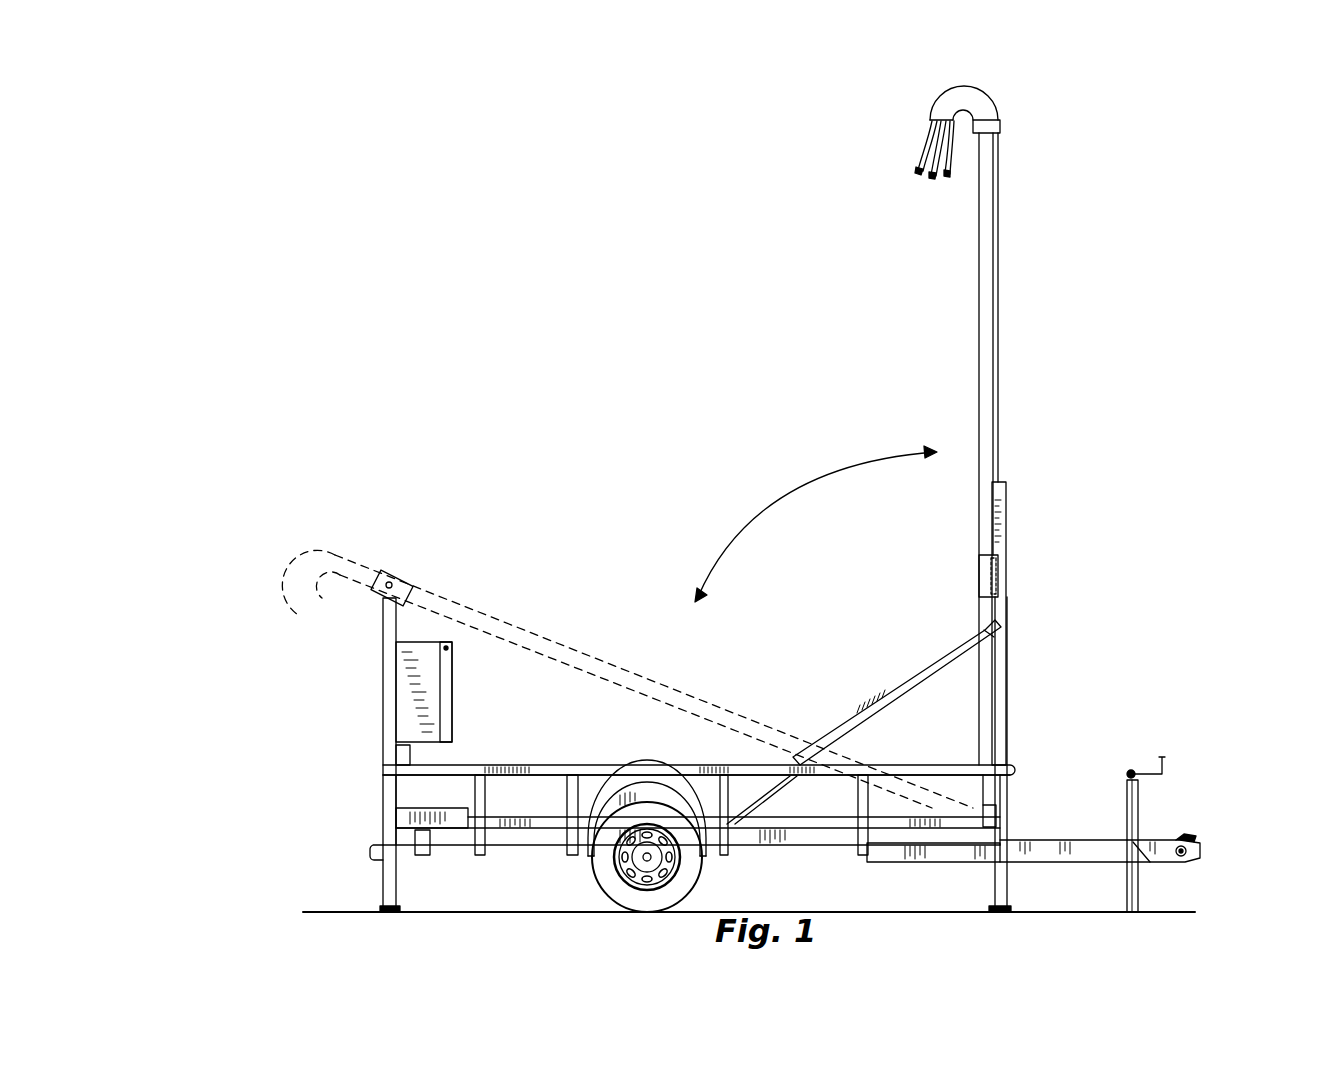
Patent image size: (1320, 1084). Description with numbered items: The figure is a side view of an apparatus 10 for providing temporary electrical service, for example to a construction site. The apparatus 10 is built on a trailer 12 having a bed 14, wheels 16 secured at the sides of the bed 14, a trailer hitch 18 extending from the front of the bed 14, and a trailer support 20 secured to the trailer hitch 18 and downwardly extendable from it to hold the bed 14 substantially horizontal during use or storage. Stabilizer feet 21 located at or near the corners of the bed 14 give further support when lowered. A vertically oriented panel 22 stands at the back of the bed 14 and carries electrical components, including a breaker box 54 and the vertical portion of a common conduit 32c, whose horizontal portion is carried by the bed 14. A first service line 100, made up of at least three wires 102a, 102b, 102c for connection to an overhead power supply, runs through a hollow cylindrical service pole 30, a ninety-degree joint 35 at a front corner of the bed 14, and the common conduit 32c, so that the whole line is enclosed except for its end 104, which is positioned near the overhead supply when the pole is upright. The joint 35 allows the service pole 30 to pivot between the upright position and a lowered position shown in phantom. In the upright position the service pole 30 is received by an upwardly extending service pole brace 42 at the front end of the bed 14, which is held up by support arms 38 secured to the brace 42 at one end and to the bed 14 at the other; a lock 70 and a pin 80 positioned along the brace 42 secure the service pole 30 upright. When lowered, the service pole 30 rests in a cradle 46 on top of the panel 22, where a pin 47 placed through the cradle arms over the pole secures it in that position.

The apparatus 10 is at (503, 384).
The trailer 12 is at (264, 698).
The bed 14 is at (332, 808).
The wheels 16 is at (610, 875).
The trailer hitch 18 is at (1150, 846).
The trailer support 20 is at (1132, 888).
The stabilizer feet 21 is at (395, 897).
The panel 22 is at (390, 665).
The service pole 30 is at (988, 262).
The common conduit 32c is at (395, 755).
The 90° joint 35 is at (1000, 805).
The support arms 38 is at (925, 672).
The service pole brace 42 is at (1000, 500).
The cradle 46 is at (404, 584).
The pin 47 is at (392, 582).
The breaker box 54 is at (405, 720).
The lock 70 is at (936, 563).
The pin 80 is at (997, 557).
The first service line 100 is at (843, 182).
The wire 102a is at (918, 166).
The wire 102b is at (931, 177).
The wire 102c is at (946, 176).
The end 104 is at (962, 157).